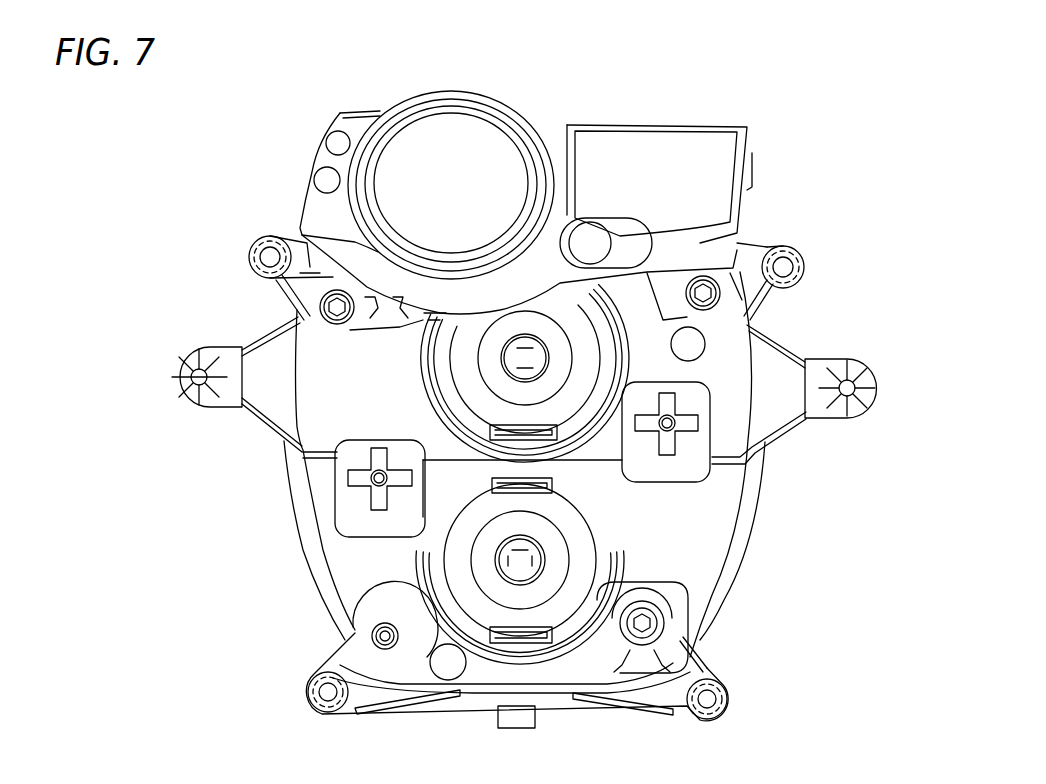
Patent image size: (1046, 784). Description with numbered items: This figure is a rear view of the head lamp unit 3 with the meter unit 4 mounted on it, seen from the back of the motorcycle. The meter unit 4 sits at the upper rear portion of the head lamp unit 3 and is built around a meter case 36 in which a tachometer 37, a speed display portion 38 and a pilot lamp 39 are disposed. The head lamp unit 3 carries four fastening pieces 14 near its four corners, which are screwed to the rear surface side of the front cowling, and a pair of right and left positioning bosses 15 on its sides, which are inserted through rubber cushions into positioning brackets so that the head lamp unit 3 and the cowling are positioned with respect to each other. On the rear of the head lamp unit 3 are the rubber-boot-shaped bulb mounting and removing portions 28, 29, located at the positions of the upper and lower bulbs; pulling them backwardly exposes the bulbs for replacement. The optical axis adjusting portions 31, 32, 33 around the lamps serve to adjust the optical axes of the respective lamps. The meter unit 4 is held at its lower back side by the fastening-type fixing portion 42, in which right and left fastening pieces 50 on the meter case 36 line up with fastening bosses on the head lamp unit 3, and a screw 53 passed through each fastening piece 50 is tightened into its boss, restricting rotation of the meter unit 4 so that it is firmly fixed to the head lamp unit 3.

The head lamp unit 3 is at (300, 568).
The meter unit 4 is at (549, 120).
The fastening pieces 14 is at (255, 243).
The positioning bosses 15 is at (185, 362).
The bulb mounting and removing portion 28 is at (443, 372).
The bulb mounting and removing portion 29 is at (492, 652).
The optical axis adjusting portion 31 is at (743, 458).
The optical axis adjusting portion 32 is at (358, 493).
The optical axis adjusting portion 33 is at (662, 617).
The meter case 36 is at (448, 93).
The tachometer 37 is at (410, 133).
The speed display portion 38 is at (662, 175).
The pilot lamp 39 is at (592, 236).
The fastening-type fixing portion 42 is at (337, 328).
The fastening pieces 50 is at (270, 278).
The screw 53 is at (300, 313).